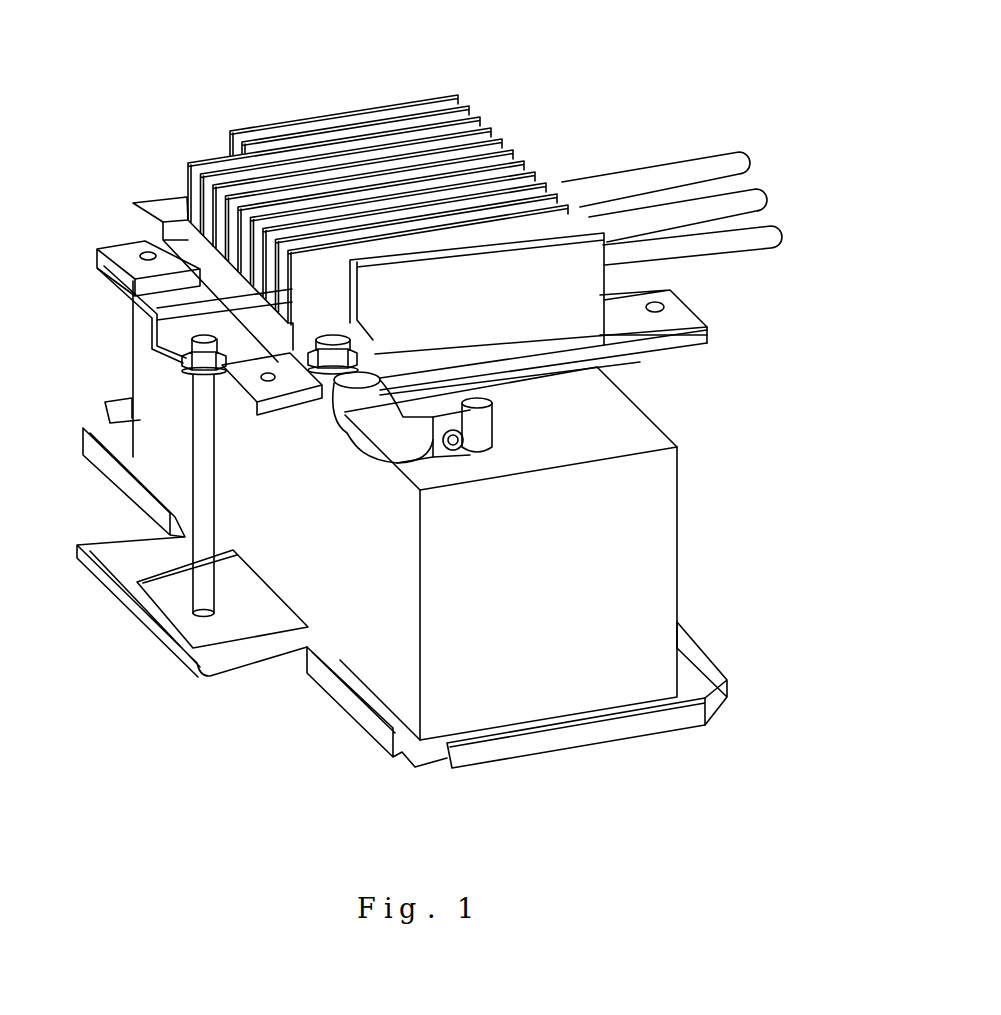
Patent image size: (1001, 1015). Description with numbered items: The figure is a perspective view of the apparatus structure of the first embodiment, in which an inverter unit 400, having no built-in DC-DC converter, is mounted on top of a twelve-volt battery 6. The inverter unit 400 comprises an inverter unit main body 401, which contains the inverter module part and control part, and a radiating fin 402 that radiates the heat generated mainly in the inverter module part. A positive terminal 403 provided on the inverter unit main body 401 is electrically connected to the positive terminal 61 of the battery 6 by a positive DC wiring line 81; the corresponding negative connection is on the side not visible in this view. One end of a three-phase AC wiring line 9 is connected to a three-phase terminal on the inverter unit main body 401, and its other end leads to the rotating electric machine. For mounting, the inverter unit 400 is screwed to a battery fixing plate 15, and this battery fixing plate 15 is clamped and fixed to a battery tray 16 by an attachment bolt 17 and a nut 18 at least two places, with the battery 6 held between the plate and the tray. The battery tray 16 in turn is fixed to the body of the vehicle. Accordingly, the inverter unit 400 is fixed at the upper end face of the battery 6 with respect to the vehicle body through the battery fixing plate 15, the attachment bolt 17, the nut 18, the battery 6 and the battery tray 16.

The inverter unit 400 is at (371, 210).
The inverter unit main body 401 is at (212, 268).
The radiating fin 402 is at (478, 116).
The positive terminal 403 is at (375, 354).
The three-phase AC wiring line 9 is at (797, 257).
The battery fixing plate 15 is at (162, 308).
The battery tray 16 is at (262, 655).
The attachment bolt 17 is at (203, 453).
The nut 18 is at (180, 354).
The 12V battery 6 is at (653, 515).
The positive terminal 61 is at (480, 397).
The positive DC wiring line 81 is at (367, 443).